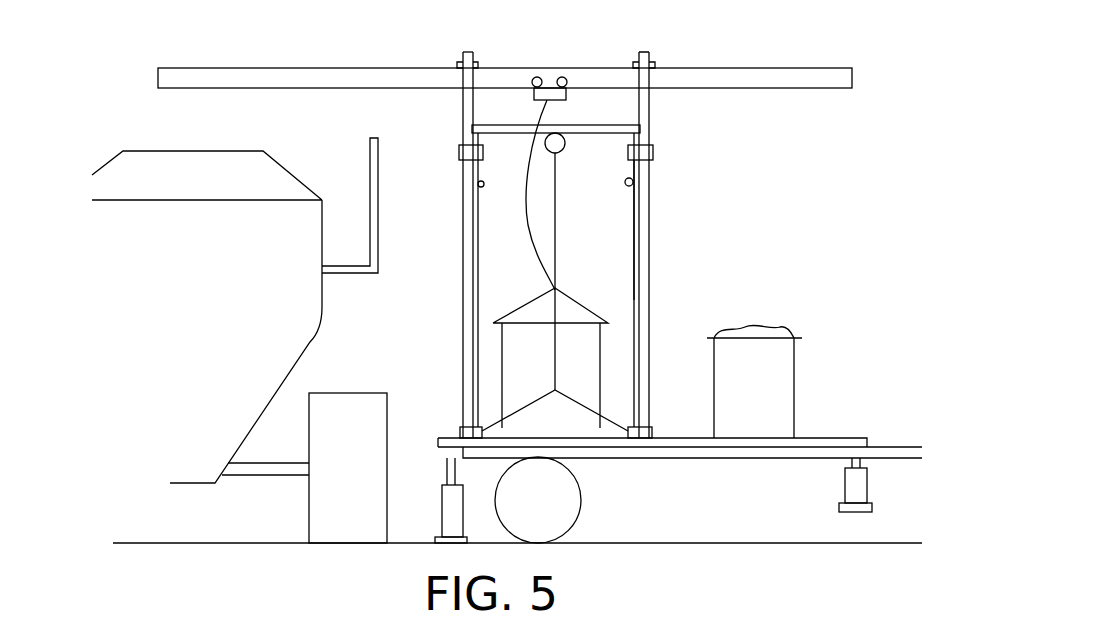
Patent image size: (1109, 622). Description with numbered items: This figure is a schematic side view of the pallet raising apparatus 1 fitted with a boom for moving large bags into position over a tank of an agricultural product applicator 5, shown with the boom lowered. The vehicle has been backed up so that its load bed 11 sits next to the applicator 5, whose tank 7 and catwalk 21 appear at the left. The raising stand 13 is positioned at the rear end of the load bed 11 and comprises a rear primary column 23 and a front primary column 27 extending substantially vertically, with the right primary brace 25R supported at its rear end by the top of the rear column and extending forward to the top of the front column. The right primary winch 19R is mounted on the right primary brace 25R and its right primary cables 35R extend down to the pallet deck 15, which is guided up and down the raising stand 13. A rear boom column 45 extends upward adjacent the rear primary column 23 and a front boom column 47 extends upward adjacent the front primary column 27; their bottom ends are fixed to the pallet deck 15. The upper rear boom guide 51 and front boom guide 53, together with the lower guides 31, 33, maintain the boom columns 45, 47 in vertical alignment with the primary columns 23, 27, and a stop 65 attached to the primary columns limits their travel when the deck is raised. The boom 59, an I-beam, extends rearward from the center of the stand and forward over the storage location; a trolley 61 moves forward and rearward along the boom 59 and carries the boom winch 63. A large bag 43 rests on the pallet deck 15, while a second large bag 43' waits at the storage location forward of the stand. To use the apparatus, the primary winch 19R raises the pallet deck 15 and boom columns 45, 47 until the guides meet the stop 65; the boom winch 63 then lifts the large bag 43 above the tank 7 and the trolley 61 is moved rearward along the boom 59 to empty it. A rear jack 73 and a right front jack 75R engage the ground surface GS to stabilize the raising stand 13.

The pallet raising apparatus 1 is at (815, 52).
The agricultural product applicator 5 is at (303, 358).
The tank 7 is at (110, 158).
The load bed 11 is at (892, 447).
The raising stand 13 is at (632, 195).
The pallet deck 15 is at (563, 425).
The right primary winch 19R is at (565, 147).
The catwalk 21 is at (370, 160).
The rear primary column 23 is at (463, 278).
The right primary brace 25R is at (600, 125).
The front primary column 27 is at (634, 272).
The lower rear boom guide 31 is at (460, 432).
The lower front boom guide 33 is at (652, 436).
The right primary cables 35R is at (555, 240).
The large bag 43 is at (603, 359).
The large bag on storage location 43' is at (793, 381).
The rear boom column 45 is at (463, 326).
The front boom column 47 is at (649, 225).
The rear boom guide 51 is at (459, 152).
The front boom guide 53 is at (653, 152).
The boom 59 is at (672, 68).
The trolley 61 is at (568, 83).
The boom winch 63 is at (535, 100).
The stop 65 is at (633, 182).
The rear jack 73 is at (442, 500).
The right front jack 75R is at (845, 485).
The ground surface GS is at (672, 543).